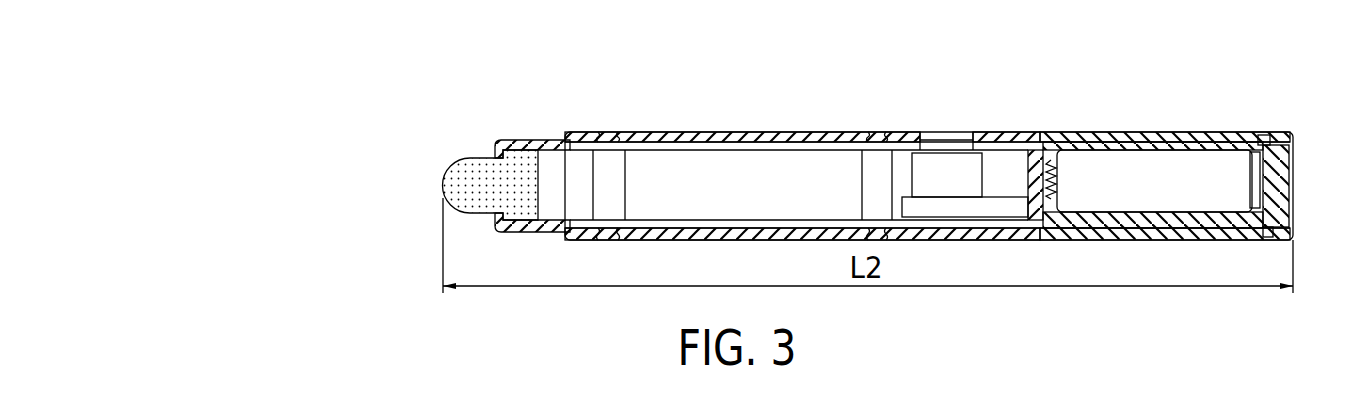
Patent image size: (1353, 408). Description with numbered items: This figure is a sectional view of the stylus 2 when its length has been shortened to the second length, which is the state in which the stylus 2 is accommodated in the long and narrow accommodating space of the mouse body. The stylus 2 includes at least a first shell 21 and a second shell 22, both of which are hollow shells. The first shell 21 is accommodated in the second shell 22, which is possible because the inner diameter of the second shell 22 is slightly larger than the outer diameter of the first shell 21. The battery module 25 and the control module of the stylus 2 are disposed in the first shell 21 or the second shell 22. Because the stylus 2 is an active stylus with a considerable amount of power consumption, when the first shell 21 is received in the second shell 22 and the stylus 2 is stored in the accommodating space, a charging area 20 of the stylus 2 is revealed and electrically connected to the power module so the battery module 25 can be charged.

The stylus 2 is at (876, 96).
The charging area 20 is at (947, 126).
The first shell 21 is at (523, 140).
The second shell 22 is at (737, 136).
The battery module 25 is at (1172, 168).